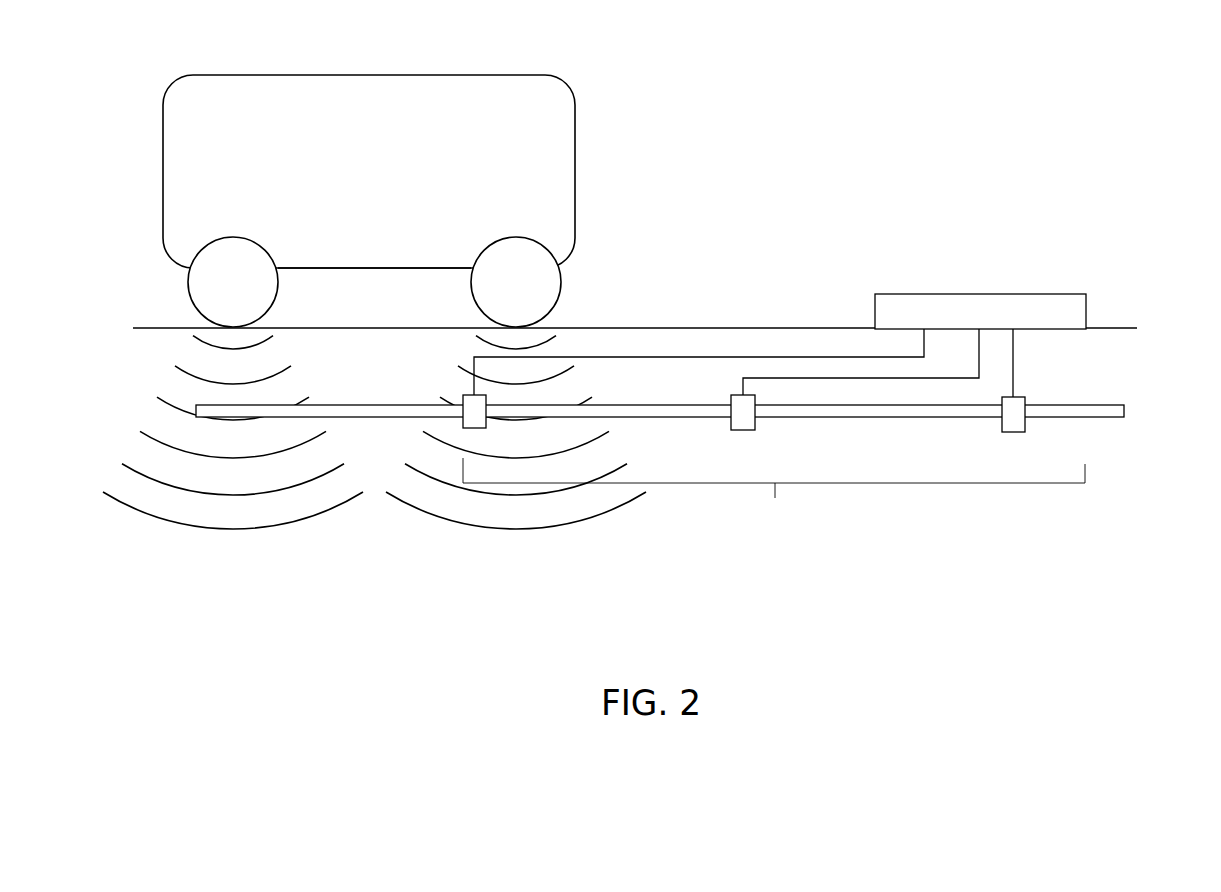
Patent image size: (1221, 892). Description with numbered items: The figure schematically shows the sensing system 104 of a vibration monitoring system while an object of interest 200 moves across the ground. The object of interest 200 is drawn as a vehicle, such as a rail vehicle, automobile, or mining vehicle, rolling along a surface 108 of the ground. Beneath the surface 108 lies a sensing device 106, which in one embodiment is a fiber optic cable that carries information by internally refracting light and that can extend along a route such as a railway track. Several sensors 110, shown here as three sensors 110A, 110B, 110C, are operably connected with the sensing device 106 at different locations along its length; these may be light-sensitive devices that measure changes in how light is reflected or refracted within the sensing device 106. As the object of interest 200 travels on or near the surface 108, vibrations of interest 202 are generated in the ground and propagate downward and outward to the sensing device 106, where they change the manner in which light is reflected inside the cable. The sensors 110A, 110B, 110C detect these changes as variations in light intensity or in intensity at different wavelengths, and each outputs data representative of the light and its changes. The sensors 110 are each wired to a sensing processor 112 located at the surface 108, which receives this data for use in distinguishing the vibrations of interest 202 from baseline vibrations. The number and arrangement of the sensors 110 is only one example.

The sensing system 104 is at (774, 492).
The sensing device 106 is at (346, 403).
The surface 108 is at (745, 320).
The sensors 110 is at (746, 392).
The sensor 110A is at (460, 398).
The sensor 110B is at (757, 422).
The sensor 110C is at (1000, 424).
The sensing processor 112 is at (988, 294).
The object of interest 200 is at (522, 86).
The vibrations of interest 202 is at (430, 531).